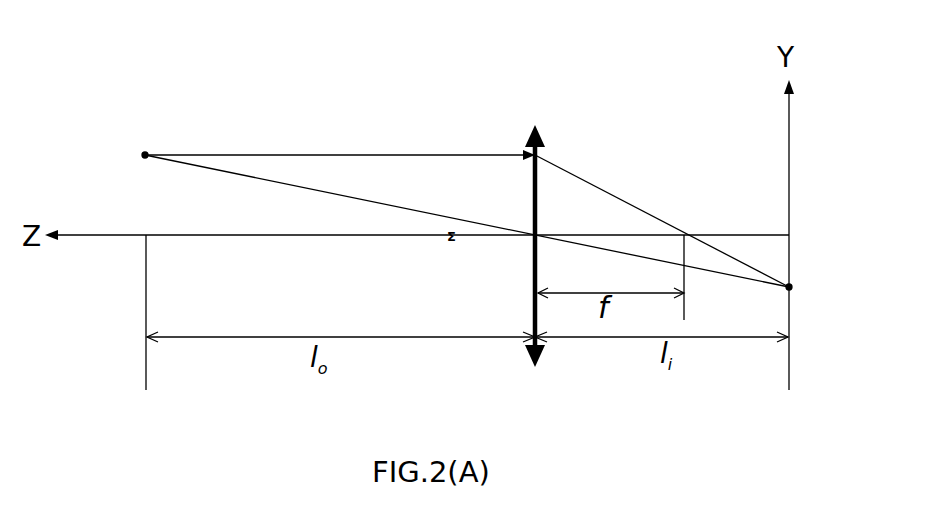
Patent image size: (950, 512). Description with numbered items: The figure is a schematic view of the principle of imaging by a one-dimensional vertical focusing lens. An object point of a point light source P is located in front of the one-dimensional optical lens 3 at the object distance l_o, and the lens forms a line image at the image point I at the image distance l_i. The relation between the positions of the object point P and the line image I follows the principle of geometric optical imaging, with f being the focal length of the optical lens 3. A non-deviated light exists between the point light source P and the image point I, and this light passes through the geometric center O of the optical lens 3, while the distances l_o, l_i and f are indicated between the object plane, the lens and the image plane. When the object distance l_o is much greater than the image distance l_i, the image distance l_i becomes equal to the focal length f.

The 1D optical lens 3 is at (533, 124).
The object point of the point light source P is at (145, 152).
The image point of the line image I is at (792, 286).
The geometric center of the 1D optical lens O is at (534, 236).